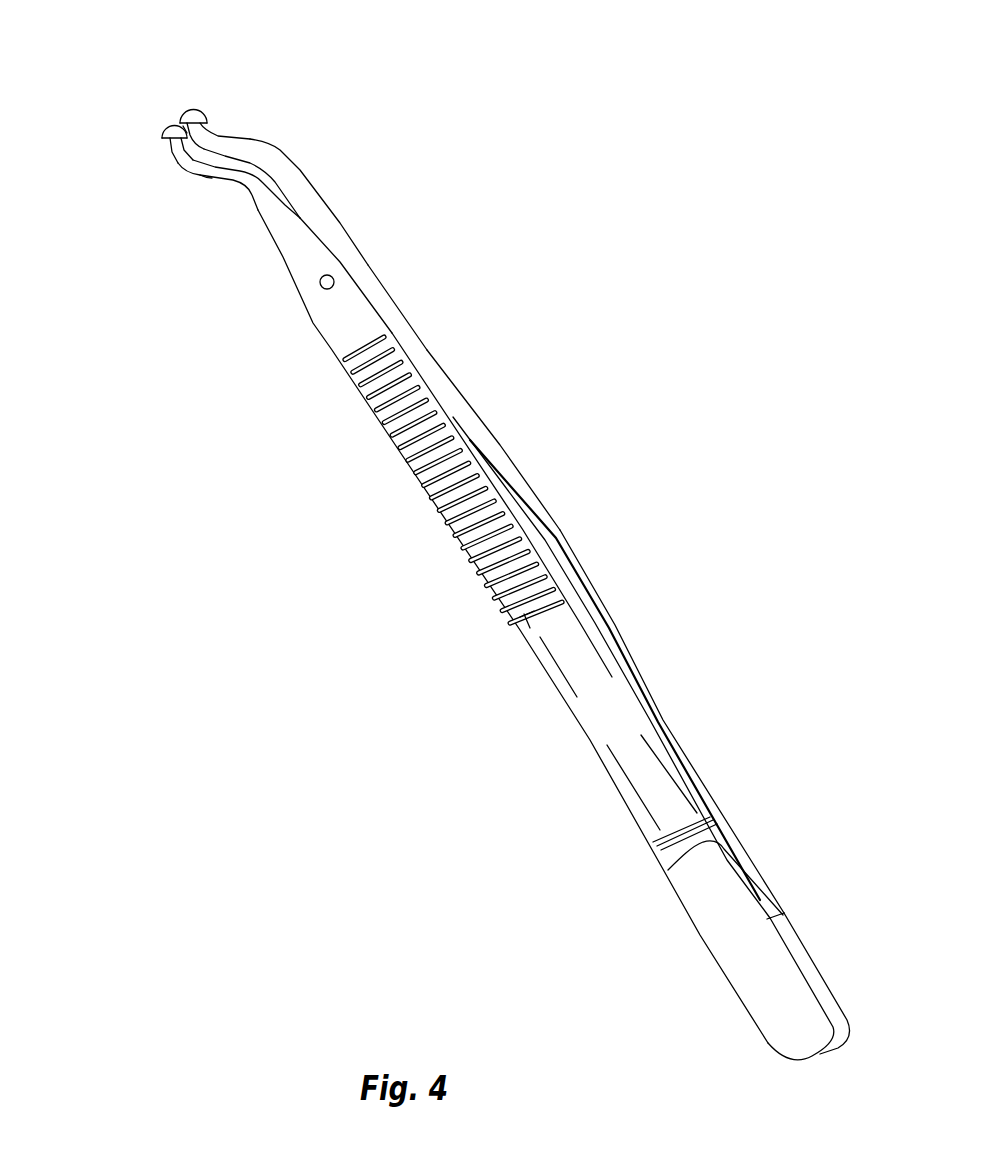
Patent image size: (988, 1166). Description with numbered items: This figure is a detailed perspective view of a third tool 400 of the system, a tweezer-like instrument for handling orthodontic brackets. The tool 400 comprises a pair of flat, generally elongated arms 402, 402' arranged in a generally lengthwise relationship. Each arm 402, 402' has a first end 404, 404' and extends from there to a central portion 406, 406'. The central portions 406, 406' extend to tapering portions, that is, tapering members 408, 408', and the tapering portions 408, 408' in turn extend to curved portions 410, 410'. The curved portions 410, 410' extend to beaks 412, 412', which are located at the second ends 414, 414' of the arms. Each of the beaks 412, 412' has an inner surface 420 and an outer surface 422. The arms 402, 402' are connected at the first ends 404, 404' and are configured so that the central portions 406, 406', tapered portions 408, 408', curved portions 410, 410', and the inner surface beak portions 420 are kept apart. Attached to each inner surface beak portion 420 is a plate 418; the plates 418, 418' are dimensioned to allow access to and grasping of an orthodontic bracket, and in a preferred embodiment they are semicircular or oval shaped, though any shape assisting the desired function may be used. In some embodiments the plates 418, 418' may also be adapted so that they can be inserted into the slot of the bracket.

The third tool 400 is at (312, 566).
The arm 402 is at (557, 625).
The arm 402' is at (627, 676).
The first end 404 is at (753, 992).
The first end 404' is at (851, 971).
The central portion 406 is at (496, 626).
The central portion 406' is at (493, 404).
The tapering portion 408 is at (296, 275).
The tapering portion 408' is at (408, 276).
The curved portion 410 is at (215, 202).
The curved portion 410' is at (286, 183).
The beak 412 is at (115, 152).
The beak 412' is at (244, 109).
The second end 414 is at (112, 113).
The second end 414' is at (147, 81).
The plate 418 is at (112, 127).
The plate 418' is at (162, 70).
The inner surface 420 is at (185, 115).
The outer surface 422 is at (212, 175).